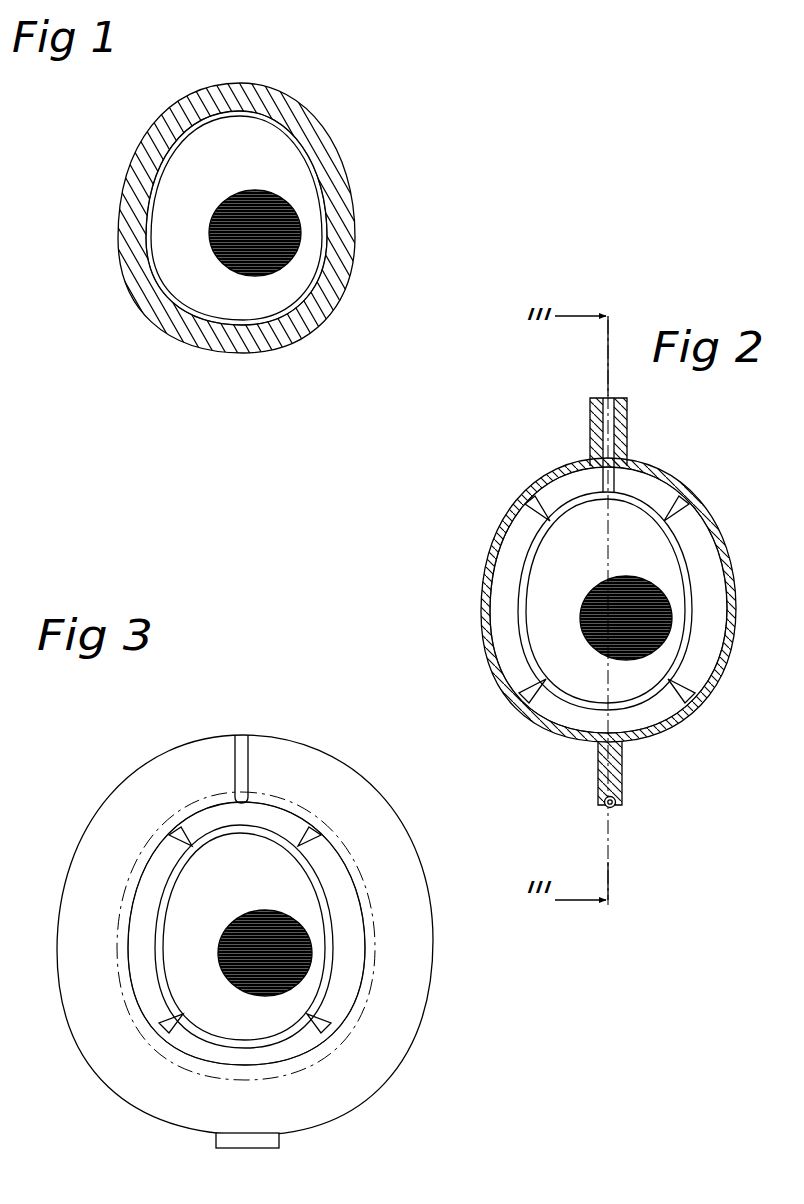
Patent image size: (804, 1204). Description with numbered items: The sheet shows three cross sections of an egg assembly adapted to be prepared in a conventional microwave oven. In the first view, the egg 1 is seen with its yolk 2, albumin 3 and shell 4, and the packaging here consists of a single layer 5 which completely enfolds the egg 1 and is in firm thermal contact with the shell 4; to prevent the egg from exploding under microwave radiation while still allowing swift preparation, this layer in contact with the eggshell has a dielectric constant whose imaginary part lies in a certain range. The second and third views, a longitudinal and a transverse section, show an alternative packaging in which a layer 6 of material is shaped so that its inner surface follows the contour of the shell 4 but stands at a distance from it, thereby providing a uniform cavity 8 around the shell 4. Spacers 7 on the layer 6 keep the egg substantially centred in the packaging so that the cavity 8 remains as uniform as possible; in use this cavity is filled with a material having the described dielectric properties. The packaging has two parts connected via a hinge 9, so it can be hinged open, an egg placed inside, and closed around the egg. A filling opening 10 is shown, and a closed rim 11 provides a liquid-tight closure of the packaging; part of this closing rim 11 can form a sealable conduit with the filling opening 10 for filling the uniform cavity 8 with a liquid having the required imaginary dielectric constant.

In FIG. 1, the egg 1 is at (138, 134).
In FIG. 2, the egg 1 is at (508, 517).
In FIG. 3, the egg 1 is at (140, 849).
In FIG. 1, the yolk 2 is at (267, 242).
In FIG. 2, the yolk 2 is at (637, 625).
In FIG. 3, the yolk 2 is at (278, 960).
In FIG. 1, the albumin 3 is at (307, 212).
In FIG. 2, the albumin 3 is at (680, 596).
In FIG. 3, the albumin 3 is at (324, 935).
In FIG. 1, the shell 4 is at (300, 145).
In FIG. 2, the shell 4 is at (687, 560).
In FIG. 3, the shell 4 is at (358, 870).
In FIG. 1, the layer 5 is at (318, 297).
In FIG. 2, the layer 6 is at (728, 660).
In FIG. 3, the layer 6 is at (368, 995).
In FIG. 2, the spacers 7 is at (670, 515).
In FIG. 3, the spacers 7 is at (306, 832).
In FIG. 2, the cavity 8 is at (652, 488).
In FIG. 3, the cavity 8 is at (203, 822).
In FIG. 2, the hinge 9 is at (605, 806).
In FIG. 3, the hinge 9 is at (232, 1138).
In FIG. 2, the filling opening 10 is at (612, 420).
In FIG. 3, the filling opening 10 is at (240, 758).
In FIG. 2, the closed rim 11 is at (618, 770).
In FIG. 3, the closed rim 11 is at (390, 1043).